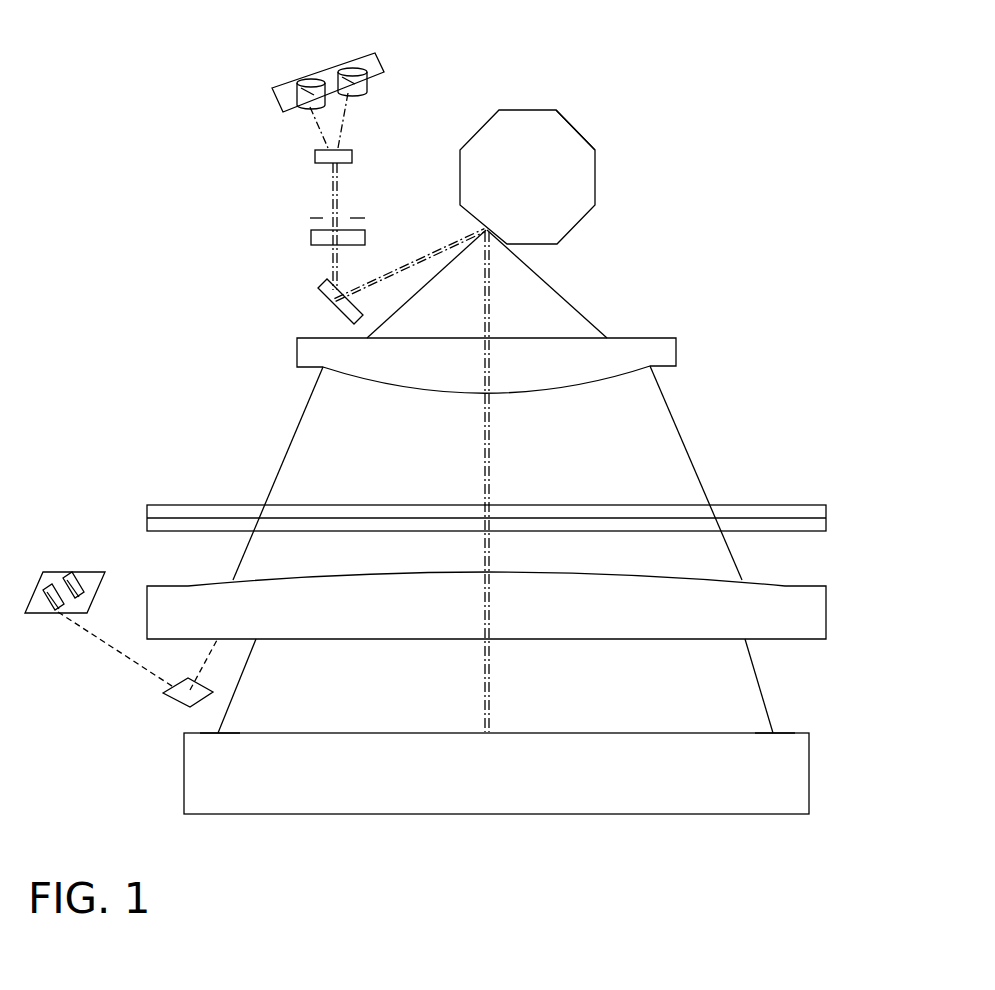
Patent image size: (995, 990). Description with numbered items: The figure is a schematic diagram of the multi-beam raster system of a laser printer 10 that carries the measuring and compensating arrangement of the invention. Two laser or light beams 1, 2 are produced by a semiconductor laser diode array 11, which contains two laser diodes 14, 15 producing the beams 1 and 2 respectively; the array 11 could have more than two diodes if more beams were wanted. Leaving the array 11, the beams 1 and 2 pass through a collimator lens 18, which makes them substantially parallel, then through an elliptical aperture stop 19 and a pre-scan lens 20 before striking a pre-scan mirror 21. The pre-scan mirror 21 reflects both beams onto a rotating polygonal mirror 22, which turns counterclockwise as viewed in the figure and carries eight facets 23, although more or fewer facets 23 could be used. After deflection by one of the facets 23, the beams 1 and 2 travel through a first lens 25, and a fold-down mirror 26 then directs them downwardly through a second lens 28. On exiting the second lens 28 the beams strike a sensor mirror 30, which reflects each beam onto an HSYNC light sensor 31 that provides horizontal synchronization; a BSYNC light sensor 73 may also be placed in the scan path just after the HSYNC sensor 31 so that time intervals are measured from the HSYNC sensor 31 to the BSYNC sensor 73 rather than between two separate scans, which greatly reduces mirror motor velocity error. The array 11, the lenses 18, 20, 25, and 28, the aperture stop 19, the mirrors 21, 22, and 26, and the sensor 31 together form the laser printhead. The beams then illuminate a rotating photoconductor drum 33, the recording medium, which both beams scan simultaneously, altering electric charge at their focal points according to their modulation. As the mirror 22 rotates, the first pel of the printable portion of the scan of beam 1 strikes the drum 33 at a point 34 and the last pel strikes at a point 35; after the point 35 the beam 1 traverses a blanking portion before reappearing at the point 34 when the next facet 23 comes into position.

The laser beam 1 is at (345, 130).
The laser beam 2 is at (325, 137).
The laser printer 10 is at (812, 462).
The semiconductor laser diode array 11 is at (333, 66).
The laser diode 14 is at (376, 71).
The laser diode 15 is at (293, 84).
The collimator lens 18 is at (315, 152).
The elliptical aperture stop 19 is at (313, 216).
The pre-scan lens 20 is at (311, 238).
The pre-scan mirror 21 is at (318, 290).
The rotating polygonal mirror 22 is at (596, 170).
The facet 23 is at (565, 118).
The first lens 25 is at (676, 352).
The fold-down mirror 26 is at (826, 518).
The second lens 28 is at (826, 610).
The sensor mirror 30 is at (163, 690).
The HSYNC light sensor 31 is at (45, 575).
The BSYNC light sensor 73 is at (80, 580).
The photoconductor drum 33 is at (809, 757).
The point 34 is at (218, 734).
The point 35 is at (773, 734).